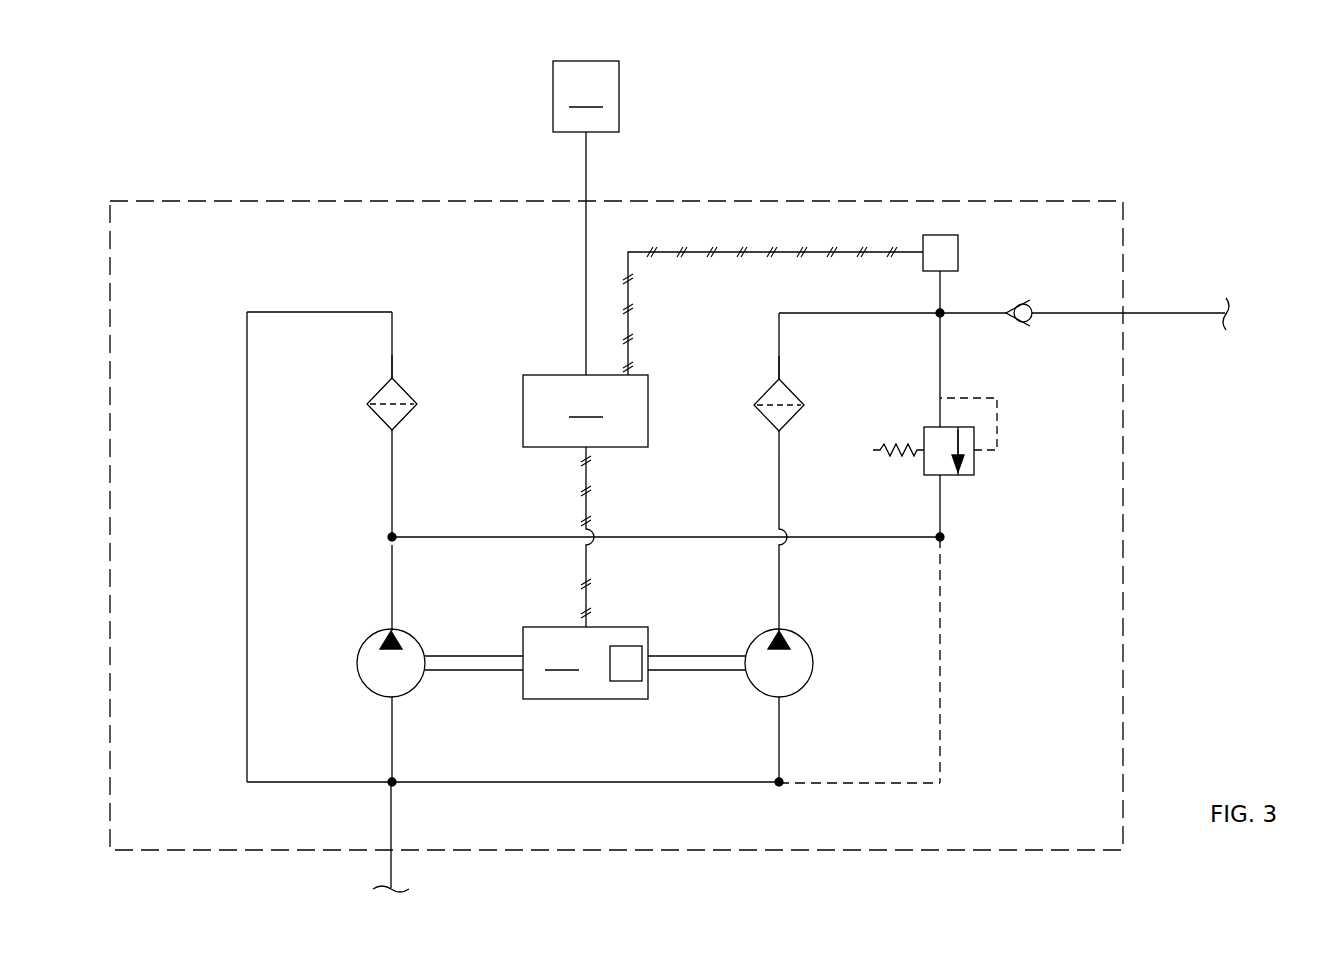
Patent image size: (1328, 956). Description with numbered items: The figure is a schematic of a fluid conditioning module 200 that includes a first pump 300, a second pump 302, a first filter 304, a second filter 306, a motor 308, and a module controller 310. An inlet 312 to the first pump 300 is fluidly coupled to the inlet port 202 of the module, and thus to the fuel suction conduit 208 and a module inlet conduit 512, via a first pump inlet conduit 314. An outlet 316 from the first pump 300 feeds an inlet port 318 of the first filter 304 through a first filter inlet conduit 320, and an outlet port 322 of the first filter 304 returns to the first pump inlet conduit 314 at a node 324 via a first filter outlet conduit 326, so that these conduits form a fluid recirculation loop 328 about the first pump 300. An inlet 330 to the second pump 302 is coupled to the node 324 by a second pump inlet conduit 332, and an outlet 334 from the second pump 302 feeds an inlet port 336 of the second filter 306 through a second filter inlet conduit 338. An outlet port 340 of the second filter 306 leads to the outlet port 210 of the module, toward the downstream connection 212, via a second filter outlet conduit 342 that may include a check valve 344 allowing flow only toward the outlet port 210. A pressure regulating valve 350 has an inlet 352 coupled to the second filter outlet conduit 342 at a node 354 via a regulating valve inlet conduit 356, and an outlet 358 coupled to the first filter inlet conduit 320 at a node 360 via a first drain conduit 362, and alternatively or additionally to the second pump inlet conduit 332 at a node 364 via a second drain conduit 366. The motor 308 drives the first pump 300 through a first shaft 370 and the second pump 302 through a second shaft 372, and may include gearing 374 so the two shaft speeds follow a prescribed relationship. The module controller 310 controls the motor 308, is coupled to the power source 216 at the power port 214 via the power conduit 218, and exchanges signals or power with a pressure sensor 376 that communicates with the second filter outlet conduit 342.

The fluid conditioning module 200 is at (1108, 190).
The inlet port 202 is at (388, 856).
The fuel suction conduit 208 is at (396, 906).
The outlet port 210 is at (1128, 316).
The downstream connection 212 is at (1256, 314).
The power port 214 is at (586, 201).
The power source 216 is at (586, 96).
The power conduit 218 is at (586, 152).
The first pump 300 is at (357, 663).
The second pump 302 is at (813, 663).
The first filter 304 is at (377, 392).
The second filter 306 is at (765, 392).
The motor 308 is at (585, 663).
The module controller 310 is at (585, 411).
The inlet 312 is at (388, 694).
The first pump inlet conduit 314 is at (393, 744).
The outlet 316 is at (388, 632).
The inlet port 318 is at (395, 428).
The first filter inlet conduit 320 is at (392, 484).
The outlet port 322 is at (395, 380).
The node 324 is at (393, 784).
The first filter outlet conduit 326 is at (247, 558).
The fluid recirculation loop 328 is at (237, 523).
The inlet 330 is at (782, 694).
The second pump inlet conduit 332 is at (708, 782).
The outlet 334 is at (782, 632).
The inlet port 336 is at (772, 428).
The second filter inlet conduit 338 is at (779, 484).
The outlet port 340 is at (782, 380).
The second filter outlet conduit 342 is at (779, 320).
The check valve 344 is at (1026, 300).
The pressure regulating valve 350 is at (980, 460).
The inlet 352 is at (935, 427).
The node 354 is at (940, 313).
The regulating valve inlet conduit 356 is at (942, 355).
The outlet 358 is at (942, 478).
The node 360 is at (393, 537).
The first drain conduit 362 is at (641, 537).
The node 364 is at (940, 537).
The second drain conduit 366 is at (942, 702).
The first shaft 370 is at (470, 655).
The second shaft 372 is at (694, 655).
The gearing 374 is at (628, 682).
The pressure sensor 376 is at (936, 235).
The module inlet conduit 512 is at (391, 822).